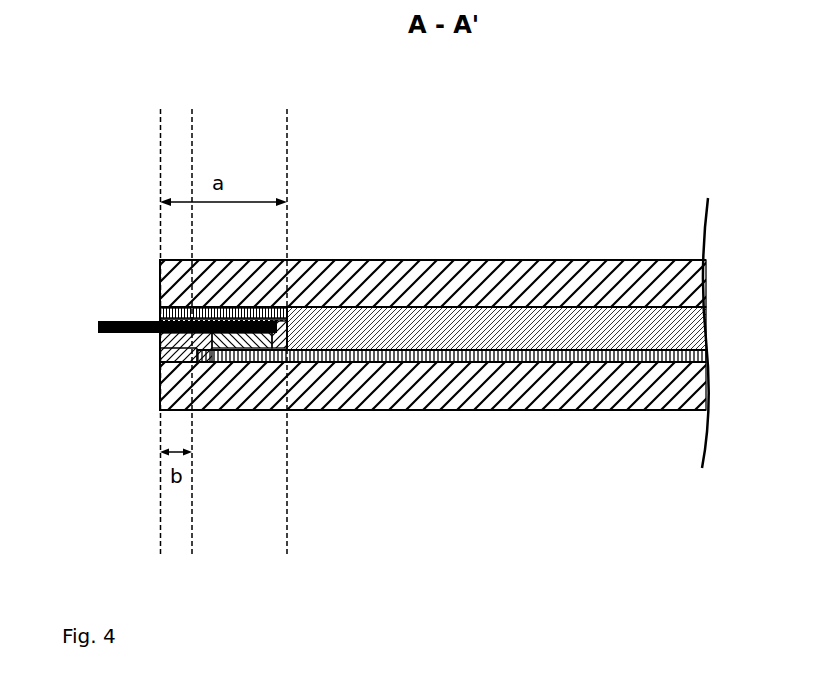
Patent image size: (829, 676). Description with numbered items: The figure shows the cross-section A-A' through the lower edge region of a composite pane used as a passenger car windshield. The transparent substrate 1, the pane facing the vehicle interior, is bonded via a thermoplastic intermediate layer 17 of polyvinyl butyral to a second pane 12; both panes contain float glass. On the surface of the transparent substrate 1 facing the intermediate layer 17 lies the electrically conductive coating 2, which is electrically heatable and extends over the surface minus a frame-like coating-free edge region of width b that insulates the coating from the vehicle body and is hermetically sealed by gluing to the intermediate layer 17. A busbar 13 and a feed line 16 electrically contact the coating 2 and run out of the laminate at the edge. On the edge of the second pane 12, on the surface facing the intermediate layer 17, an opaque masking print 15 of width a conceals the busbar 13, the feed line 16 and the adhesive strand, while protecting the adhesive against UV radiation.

The transparent substrate 1 is at (665, 388).
The electrically conductive coating 2 is at (675, 354).
The second pane 12 is at (617, 275).
The busbar 13 is at (230, 340).
The masking print 15 is at (160, 307).
The feed line 16 is at (102, 320).
The thermoplastic intermediate layer 17 is at (505, 340).